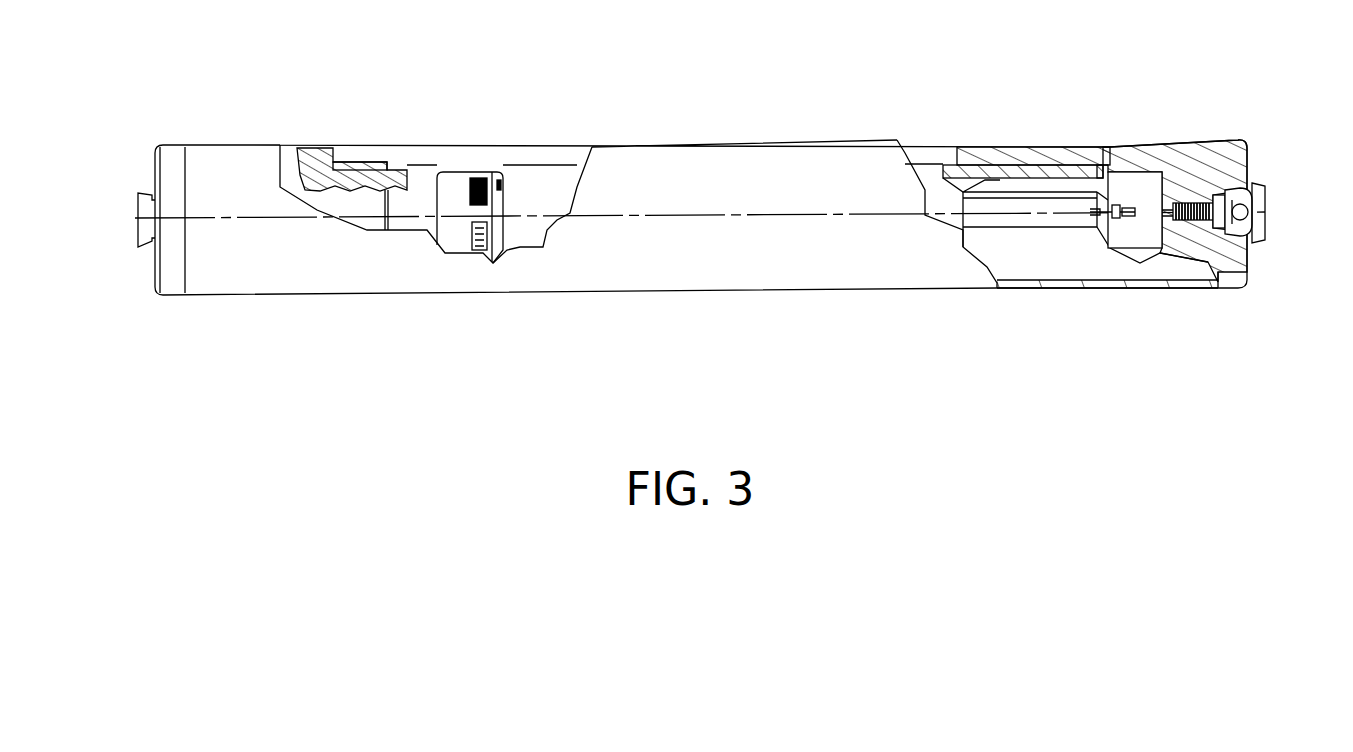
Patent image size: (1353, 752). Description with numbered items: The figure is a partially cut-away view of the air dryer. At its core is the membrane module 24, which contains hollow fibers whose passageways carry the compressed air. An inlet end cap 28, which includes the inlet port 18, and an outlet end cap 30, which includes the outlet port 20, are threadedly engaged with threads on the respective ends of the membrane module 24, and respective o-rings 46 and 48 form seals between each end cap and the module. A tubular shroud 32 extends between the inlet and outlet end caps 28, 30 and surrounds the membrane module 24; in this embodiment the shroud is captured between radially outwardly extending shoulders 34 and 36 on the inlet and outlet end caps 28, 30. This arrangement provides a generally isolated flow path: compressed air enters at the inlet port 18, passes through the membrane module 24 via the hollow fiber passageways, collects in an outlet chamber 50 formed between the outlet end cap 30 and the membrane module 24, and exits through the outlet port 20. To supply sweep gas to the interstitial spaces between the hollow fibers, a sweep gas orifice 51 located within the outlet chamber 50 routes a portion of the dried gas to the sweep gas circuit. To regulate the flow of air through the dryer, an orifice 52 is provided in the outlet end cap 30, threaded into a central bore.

The inlet port 18 is at (140, 192).
The outlet port 20 is at (1262, 183).
The membrane module 24 is at (472, 170).
The inlet end cap 28 is at (325, 167).
The outlet end cap 30 is at (1240, 137).
The tubular shroud 32 is at (750, 142).
The shoulder 34 is at (172, 165).
The shoulder 36 is at (1228, 152).
The o-ring 46 is at (320, 165).
The o-ring 48 is at (1013, 162).
The outlet chamber 50 is at (1142, 188).
The sweep gas orifice 51 is at (1118, 197).
The orifice 52 is at (1188, 200).